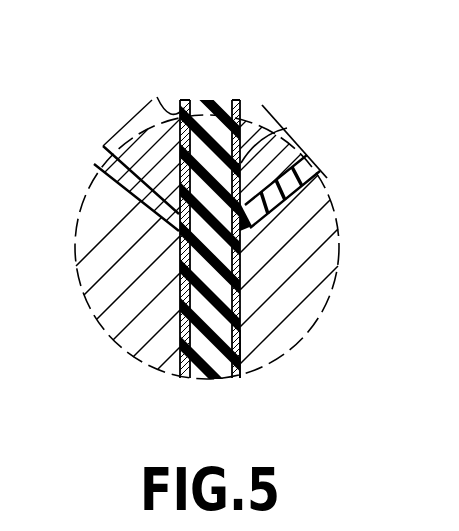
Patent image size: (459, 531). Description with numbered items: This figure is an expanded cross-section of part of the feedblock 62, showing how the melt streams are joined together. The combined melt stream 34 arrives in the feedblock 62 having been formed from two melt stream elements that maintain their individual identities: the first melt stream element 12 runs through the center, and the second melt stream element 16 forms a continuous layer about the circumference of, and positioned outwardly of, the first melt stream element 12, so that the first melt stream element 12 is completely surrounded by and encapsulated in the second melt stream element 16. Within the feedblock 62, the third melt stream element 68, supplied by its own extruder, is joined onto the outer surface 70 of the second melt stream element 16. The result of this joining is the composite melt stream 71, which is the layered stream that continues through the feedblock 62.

The first melt stream element 12 is at (209, 97).
The second melt stream element 16 is at (190, 102).
The combined melt stream 34 is at (166, 152).
The feedblock 62 is at (342, 259).
The third melt stream element 68 is at (110, 178).
The outer surface 70 is at (184, 110).
The composite melt stream 71 is at (255, 344).